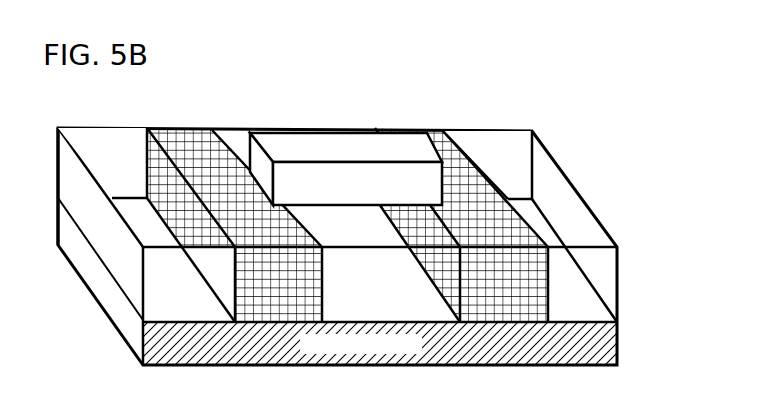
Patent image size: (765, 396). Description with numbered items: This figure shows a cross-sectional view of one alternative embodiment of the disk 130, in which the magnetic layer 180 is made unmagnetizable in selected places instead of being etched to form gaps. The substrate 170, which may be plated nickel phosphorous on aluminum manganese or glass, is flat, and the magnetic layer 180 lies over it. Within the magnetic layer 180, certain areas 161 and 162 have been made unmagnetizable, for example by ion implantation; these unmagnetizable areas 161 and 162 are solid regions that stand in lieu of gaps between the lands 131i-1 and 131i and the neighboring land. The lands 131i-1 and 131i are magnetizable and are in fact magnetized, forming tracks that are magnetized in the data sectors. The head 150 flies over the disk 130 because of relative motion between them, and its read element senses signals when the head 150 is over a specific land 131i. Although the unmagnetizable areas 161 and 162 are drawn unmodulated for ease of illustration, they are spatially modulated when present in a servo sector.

The disk 130 is at (324, 83).
The land 131i-1 is at (212, 304).
The land 131i is at (398, 295).
The head 150 is at (367, 198).
The unmagnetizable area 161 is at (212, 138).
The unmagnetizable area 162 is at (435, 130).
The substrate 170 is at (495, 354).
The magnetic layer 180 is at (98, 157).